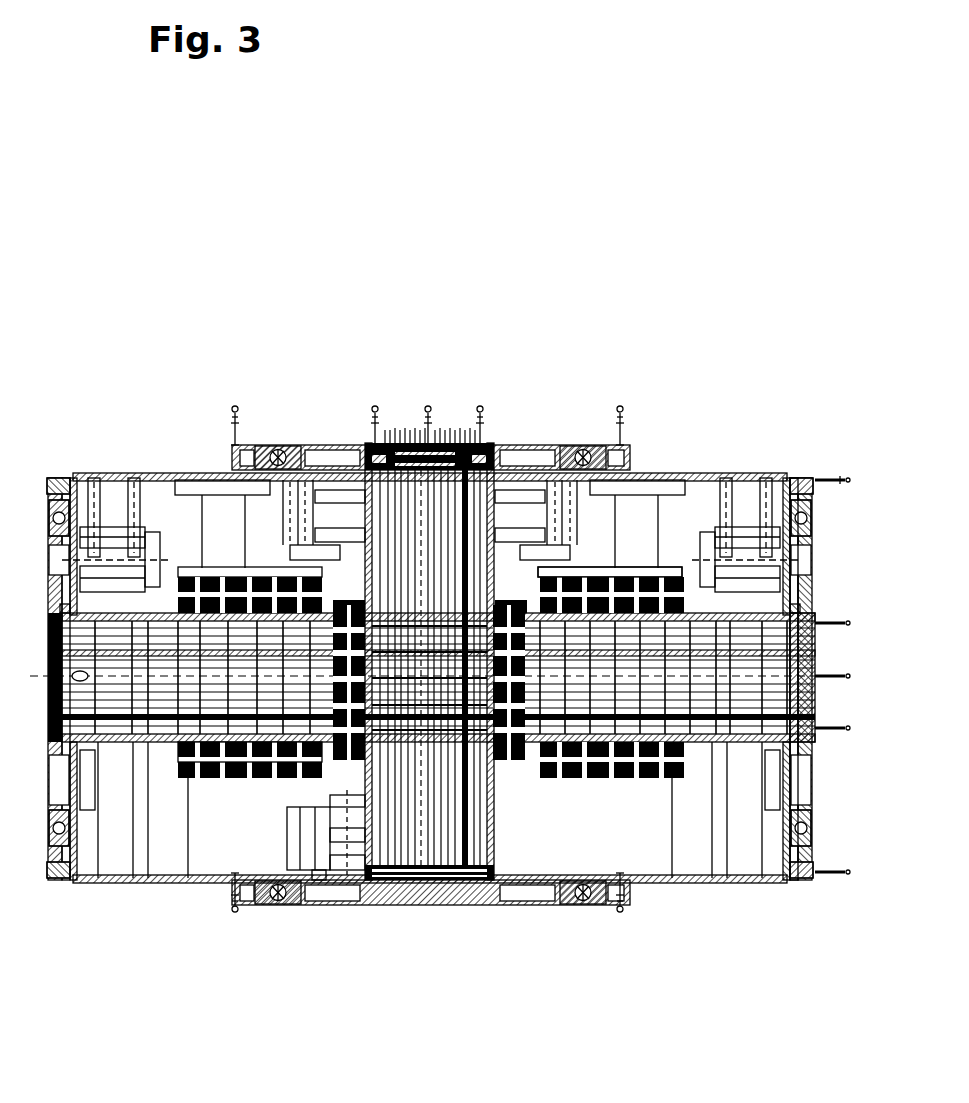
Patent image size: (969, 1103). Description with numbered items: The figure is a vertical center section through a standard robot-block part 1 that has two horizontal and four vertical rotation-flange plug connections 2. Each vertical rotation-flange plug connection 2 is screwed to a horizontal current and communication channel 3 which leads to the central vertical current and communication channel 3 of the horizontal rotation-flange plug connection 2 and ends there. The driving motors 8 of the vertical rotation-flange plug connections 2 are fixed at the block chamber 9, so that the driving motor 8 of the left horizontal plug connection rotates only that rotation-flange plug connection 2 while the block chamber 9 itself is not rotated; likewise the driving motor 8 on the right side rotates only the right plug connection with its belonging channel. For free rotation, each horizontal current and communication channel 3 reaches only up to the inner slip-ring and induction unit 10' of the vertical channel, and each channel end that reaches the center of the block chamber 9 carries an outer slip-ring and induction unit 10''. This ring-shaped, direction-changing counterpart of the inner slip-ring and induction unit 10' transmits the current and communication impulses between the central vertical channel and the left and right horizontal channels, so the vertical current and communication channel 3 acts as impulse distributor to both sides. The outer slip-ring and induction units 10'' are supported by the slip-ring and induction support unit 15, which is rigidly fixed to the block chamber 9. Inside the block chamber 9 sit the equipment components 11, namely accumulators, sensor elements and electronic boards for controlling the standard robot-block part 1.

The standard robot-block part 1 is at (567, 428).
The rotation-flange plug connection 2 is at (45, 548).
The current and communication channel 3 is at (157, 748).
The driving motor 8 is at (287, 820).
The block chamber 9 is at (665, 473).
The inner slip-ring and induction unit 10' is at (250, 773).
The outer slip-ring and induction unit 10'' is at (590, 572).
The equipment components 11 is at (168, 862).
The slip-ring and induction support unit 15 is at (617, 513).